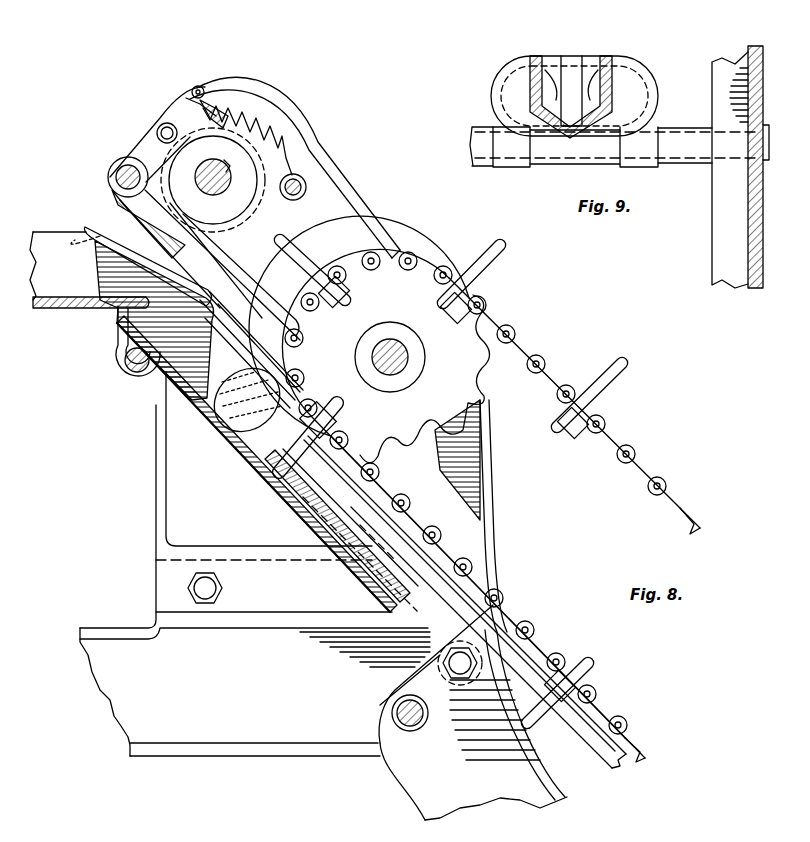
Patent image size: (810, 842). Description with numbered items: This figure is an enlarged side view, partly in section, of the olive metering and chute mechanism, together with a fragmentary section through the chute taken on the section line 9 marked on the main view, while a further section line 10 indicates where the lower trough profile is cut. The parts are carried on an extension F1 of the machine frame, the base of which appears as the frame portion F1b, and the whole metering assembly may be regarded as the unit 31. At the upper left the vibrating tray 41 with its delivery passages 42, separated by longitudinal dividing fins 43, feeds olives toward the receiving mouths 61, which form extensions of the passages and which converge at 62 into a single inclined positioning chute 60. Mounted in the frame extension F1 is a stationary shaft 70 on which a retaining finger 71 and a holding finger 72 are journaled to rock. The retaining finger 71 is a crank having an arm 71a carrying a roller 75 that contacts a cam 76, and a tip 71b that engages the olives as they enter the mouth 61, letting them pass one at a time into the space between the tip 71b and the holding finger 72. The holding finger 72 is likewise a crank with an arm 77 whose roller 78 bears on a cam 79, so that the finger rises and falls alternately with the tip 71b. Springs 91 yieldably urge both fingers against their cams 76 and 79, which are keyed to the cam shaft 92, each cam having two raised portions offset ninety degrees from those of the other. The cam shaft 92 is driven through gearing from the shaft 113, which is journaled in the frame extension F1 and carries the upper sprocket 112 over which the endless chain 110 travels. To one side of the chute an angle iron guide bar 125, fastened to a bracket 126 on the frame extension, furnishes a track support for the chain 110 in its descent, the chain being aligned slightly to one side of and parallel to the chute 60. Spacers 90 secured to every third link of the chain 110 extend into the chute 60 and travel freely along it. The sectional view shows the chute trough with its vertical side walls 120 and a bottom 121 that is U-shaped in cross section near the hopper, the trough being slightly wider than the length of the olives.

In FIG. 8, the frame extension F1 is at (490, 450).
In FIG. 9, the frame extension F1 is at (756, 86).
In FIG. 8, the frame base F1b is at (106, 628).
In FIG. 8, the section line 9— 9 is at (222, 432).
In FIG. 8, the section line 10— 10 is at (356, 790).
In FIG. 8, the drive mechanism 31 is at (266, 90).
In FIG. 8, the vibrating tray 41 is at (52, 228).
In FIG. 8, the delivery passages 42 is at (42, 308).
In FIG. 8, the longitudinal dividing fins 43 is at (58, 266).
In FIG. 9, the positioning chute 60 is at (552, 58).
In FIG. 8, the receiving mouths 61 is at (76, 232).
In FIG. 9, the receiving mouths 61 is at (505, 95).
In FIG. 8, the convergence of mouths 62 is at (252, 432).
In FIG. 9, the convergence of mouths 62 is at (573, 70).
In FIG. 8, the stationary shaft 70 is at (112, 178).
In FIG. 8, the retaining finger 71 is at (218, 300).
In FIG. 8, the arm 71a is at (208, 128).
In FIG. 8, the tip 71b is at (224, 338).
In FIG. 8, the holding finger 72 is at (253, 262).
In FIG. 8, the roller 75 is at (150, 145).
In FIG. 8, the cam 76 is at (262, 150).
In FIG. 8, the arm 77 is at (192, 90).
In FIG. 8, the roller 78 is at (165, 124).
In FIG. 8, the cam 79 is at (218, 150).
In FIG. 8, the spacer 90 is at (290, 252).
In FIG. 8, the springs 91 is at (278, 170).
In FIG. 8, the cam shaft 92 is at (252, 118).
In FIG. 8, the endless chain 110 is at (406, 262).
In FIG. 8, the upper sprocket 112 is at (425, 407).
In FIG. 8, the shaft 113 is at (388, 346).
In FIG. 9, the vertical side walls 120 is at (594, 70).
In FIG. 9, the bottom 121 is at (547, 138).
In FIG. 8, the angle iron guide bar 125 is at (418, 522).
In FIG. 8, the bracket 126 is at (474, 682).